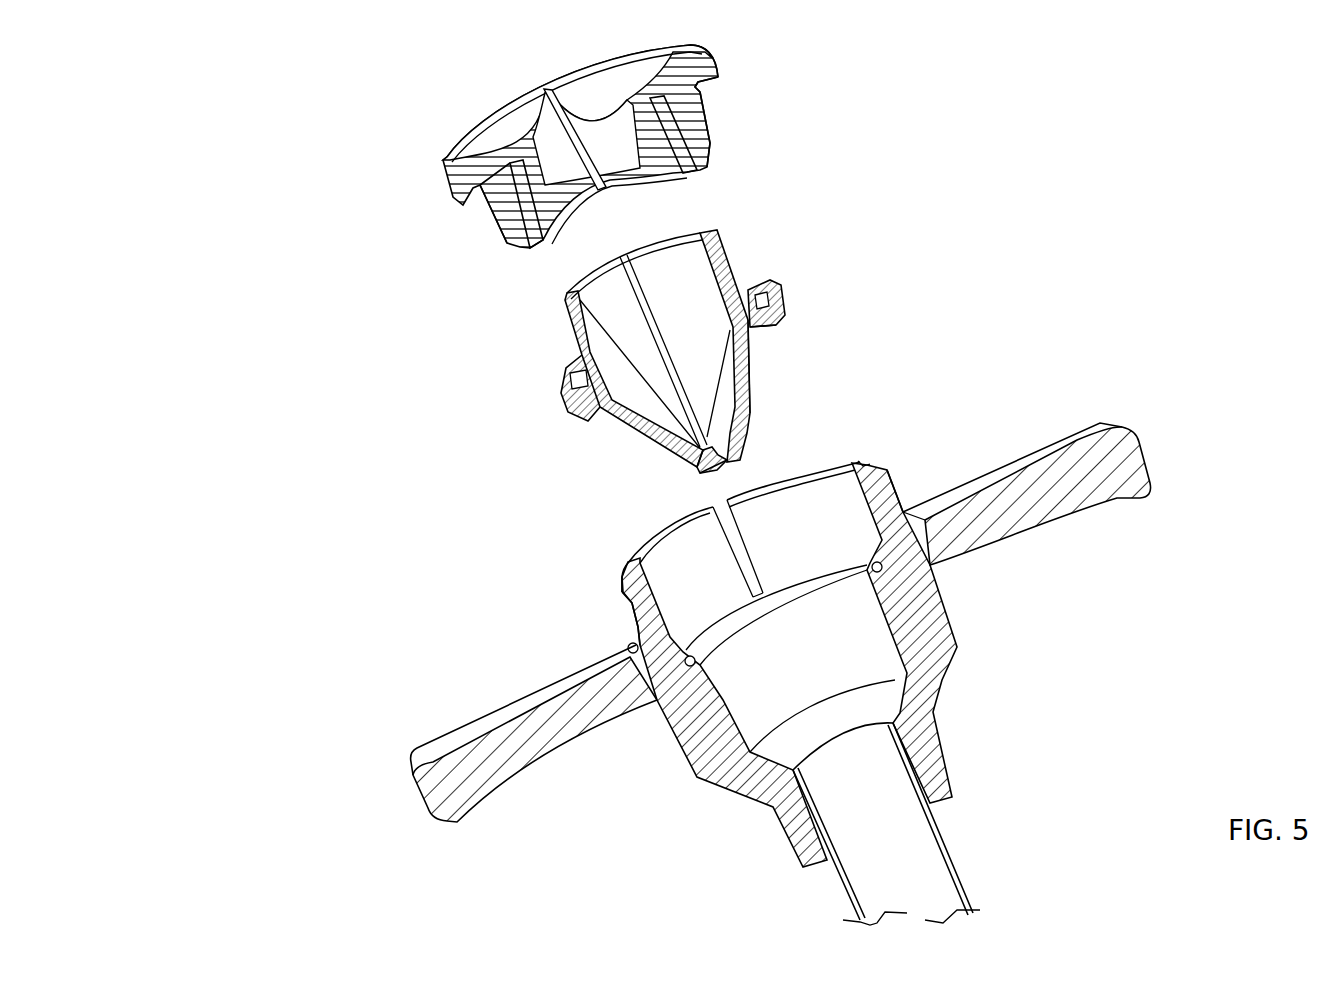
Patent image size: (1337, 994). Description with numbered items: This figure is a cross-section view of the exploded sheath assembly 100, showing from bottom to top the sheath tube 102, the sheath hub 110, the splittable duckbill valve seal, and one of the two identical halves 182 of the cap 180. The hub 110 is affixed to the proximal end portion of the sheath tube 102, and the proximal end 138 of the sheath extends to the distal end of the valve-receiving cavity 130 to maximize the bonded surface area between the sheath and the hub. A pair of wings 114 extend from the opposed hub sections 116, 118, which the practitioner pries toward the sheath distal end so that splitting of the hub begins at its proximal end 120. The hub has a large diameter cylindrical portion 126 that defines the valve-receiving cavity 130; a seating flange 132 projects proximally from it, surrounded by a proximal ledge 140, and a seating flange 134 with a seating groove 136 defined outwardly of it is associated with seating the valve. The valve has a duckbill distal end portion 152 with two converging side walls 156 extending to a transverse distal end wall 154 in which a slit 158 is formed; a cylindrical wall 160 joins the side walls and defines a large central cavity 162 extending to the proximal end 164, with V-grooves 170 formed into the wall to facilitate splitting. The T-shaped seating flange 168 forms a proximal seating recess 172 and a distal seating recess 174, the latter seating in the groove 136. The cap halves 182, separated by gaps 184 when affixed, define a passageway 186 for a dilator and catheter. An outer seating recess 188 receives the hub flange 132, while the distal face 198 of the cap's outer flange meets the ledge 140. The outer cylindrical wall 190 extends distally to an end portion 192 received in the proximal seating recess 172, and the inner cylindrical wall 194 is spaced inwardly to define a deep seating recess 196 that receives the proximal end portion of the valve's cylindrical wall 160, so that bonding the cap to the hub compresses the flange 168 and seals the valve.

The sheath assembly 100 is at (736, 471).
The sheath tube 102 is at (925, 824).
The sheath hub 110 is at (799, 613).
The wings 114 is at (799, 651).
The hub section 116 is at (696, 712).
The hub section 118 is at (955, 633).
The proximal end of hub 120 is at (559, 609).
The large diameter cylindrical portion 126 is at (954, 451).
The valve-receiving cavity 130 is at (904, 691).
The seating flange 132 is at (939, 406).
The seating flange 134 is at (962, 477).
The seating groove 136 is at (872, 613).
The proximal end of sheath 138 is at (925, 746).
The proximal ledge 140 is at (550, 550).
The distal end portion 152 is at (784, 346).
The distal end wall 154 is at (772, 448).
The side walls 156 is at (696, 392).
The slit 158 is at (662, 471).
The cylindrical wall 160 is at (685, 348).
The central cavity 162 is at (724, 335).
The proximal end of valve 164 is at (570, 379).
The seating flange 168 is at (840, 303).
The V-grooves 170 is at (704, 324).
The proximal seating recess 172 is at (811, 284).
The distal seating recess 174 is at (809, 342).
The cap 180 is at (554, 173).
The cap halves 182 is at (596, 146).
The gaps 184 is at (510, 113).
The passageway 186 is at (625, 150).
The outer seating recess 188 is at (748, 101).
The outer cylindrical wall 190 is at (583, 175).
The end portion 192 is at (784, 143).
The inner cylindrical wall 194 is at (526, 253).
The deep seating recess 196 is at (454, 223).
The distal face 198 is at (745, 48).